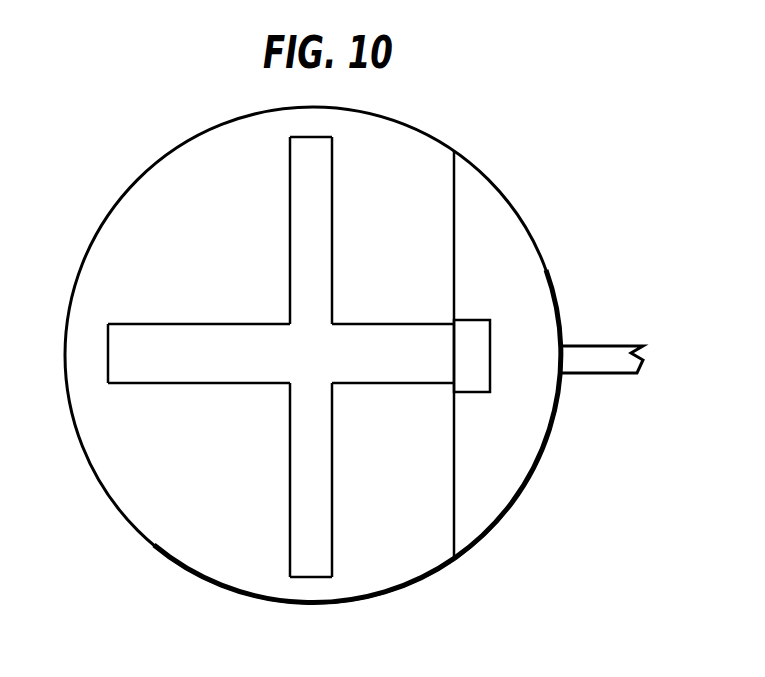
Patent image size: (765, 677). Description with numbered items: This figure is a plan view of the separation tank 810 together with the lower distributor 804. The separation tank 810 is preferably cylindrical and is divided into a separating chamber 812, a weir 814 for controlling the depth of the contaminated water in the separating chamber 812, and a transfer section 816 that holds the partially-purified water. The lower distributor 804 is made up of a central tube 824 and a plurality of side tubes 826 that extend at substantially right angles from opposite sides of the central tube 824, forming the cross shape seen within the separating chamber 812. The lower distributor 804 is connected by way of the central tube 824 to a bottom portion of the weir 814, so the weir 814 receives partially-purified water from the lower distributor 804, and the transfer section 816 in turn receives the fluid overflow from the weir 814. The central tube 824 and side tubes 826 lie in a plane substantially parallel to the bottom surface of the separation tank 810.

The separation tank 810 is at (413, 128).
The lower distributor 804 is at (281, 357).
The central tube 824 is at (155, 384).
The side tubes 826 is at (333, 225).
The weir 814 is at (472, 320).
The transfer section 816 is at (520, 447).
The separating chamber 812 is at (410, 502).